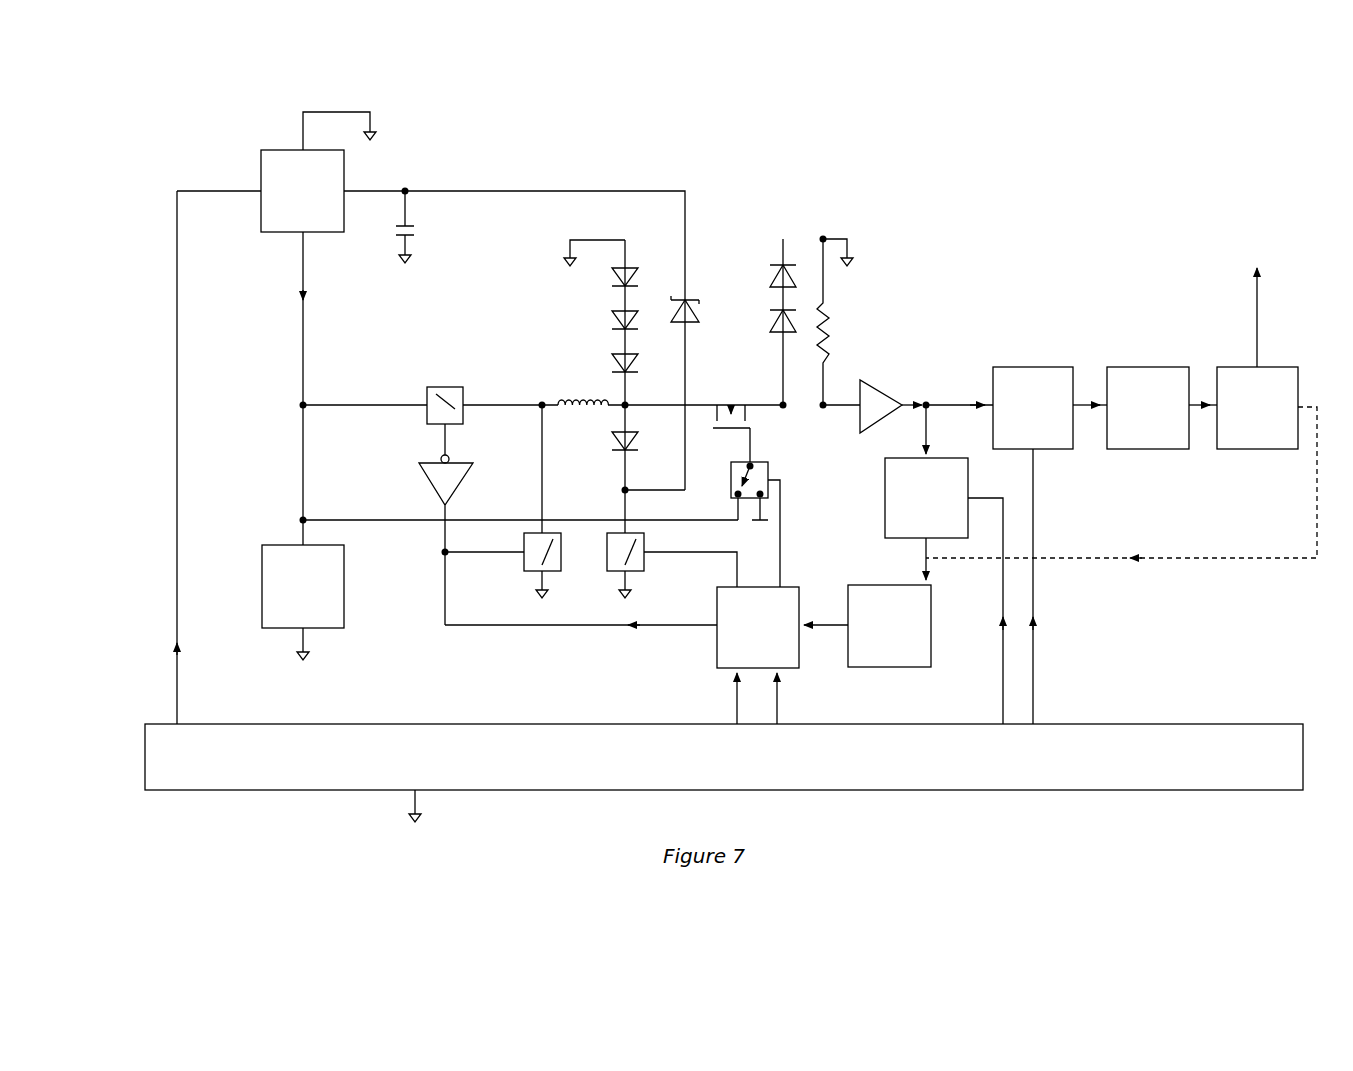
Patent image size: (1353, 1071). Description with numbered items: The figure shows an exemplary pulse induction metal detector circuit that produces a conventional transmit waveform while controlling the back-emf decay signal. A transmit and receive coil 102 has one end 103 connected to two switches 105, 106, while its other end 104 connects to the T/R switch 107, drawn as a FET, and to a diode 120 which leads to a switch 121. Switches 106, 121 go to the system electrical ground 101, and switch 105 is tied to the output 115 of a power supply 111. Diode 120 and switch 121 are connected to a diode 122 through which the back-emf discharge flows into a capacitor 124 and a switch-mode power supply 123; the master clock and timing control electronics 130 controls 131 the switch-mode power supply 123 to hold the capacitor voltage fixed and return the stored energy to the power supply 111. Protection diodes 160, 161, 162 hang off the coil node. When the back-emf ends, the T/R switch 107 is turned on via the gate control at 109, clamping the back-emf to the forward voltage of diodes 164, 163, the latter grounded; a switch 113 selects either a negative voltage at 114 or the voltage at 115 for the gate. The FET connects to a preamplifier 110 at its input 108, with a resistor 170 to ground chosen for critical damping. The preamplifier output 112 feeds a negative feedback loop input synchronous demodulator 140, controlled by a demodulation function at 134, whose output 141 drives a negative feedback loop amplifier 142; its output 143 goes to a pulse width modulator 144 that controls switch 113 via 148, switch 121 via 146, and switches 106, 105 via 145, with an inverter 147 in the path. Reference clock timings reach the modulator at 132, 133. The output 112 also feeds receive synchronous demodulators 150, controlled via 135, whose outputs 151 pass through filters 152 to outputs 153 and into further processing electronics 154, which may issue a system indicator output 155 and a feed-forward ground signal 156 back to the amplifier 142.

The system electrical ground 101 is at (372, 140).
The transmit and receive coil 102 is at (556, 402).
The one end of the transmit and receive coil 103 is at (540, 410).
The other end of the transmit and receive coil 104 is at (616, 440).
The switch 105 is at (438, 388).
The switch 106 is at (522, 562).
The T/R switch 107 is at (752, 420).
The preamplifier input 108 is at (780, 400).
The gate control 109 is at (740, 448).
The preamplifier 110 is at (885, 392).
The power supply 111 is at (303, 586).
The output of the preamplifier 112 is at (928, 400).
The switch 113 is at (770, 480).
The voltage 114 is at (761, 523).
The output of the power supply 115 is at (300, 315).
The diode 120 is at (614, 458).
The switch 121 is at (618, 558).
The diode 122 is at (690, 310).
The switch-mode power supply 123 is at (302, 191).
The capacitor 124 is at (396, 237).
The master clock and timing control electronics 130 is at (724, 757).
The control of the switch-mode power supply 131 is at (175, 595).
The reference clock timing input 132 is at (733, 680).
The reference clock timing input 133 is at (780, 680).
The demodulation function 134 is at (1000, 680).
The control of the receive synchronous demodulators 135 is at (1036, 680).
The negative feedback loop input synchronous demodulator 140 is at (926, 498).
The output of the negative feedback loop input synchronous demodulator 141 is at (930, 560).
The negative feedback loop amplifier 142 is at (889, 626).
The output of the negative feedback loop amplifier 143 is at (835, 628).
The pulse width modulator 144 is at (758, 627).
The control line 145 is at (445, 628).
The control line 146 is at (724, 560).
The inverter 147 is at (426, 490).
The control line 148 is at (782, 525).
The receive synchronous demodulators 150 is at (1033, 408).
The outputs of the receive synchronous demodulators 151 is at (1092, 415).
The filters 152 is at (1148, 408).
The outputs of the filters 153 is at (1198, 415).
The further processing electronics 154 is at (1257, 408).
The system indicator output 155 is at (1257, 304).
The output 156 is at (1100, 556).
The diode 160 is at (630, 268).
The diode 161 is at (618, 320).
The diode 162 is at (618, 362).
The diode 163 is at (775, 278).
The diode 164 is at (775, 320).
The resistor 170 is at (845, 324).